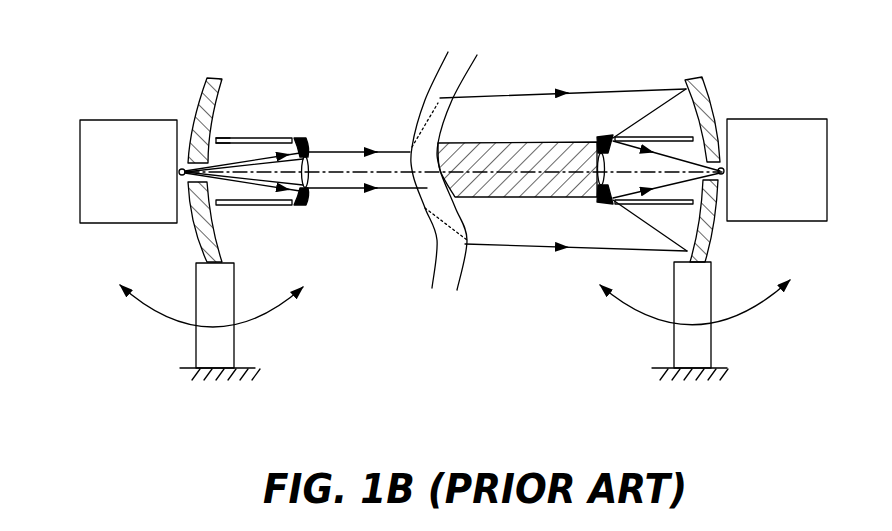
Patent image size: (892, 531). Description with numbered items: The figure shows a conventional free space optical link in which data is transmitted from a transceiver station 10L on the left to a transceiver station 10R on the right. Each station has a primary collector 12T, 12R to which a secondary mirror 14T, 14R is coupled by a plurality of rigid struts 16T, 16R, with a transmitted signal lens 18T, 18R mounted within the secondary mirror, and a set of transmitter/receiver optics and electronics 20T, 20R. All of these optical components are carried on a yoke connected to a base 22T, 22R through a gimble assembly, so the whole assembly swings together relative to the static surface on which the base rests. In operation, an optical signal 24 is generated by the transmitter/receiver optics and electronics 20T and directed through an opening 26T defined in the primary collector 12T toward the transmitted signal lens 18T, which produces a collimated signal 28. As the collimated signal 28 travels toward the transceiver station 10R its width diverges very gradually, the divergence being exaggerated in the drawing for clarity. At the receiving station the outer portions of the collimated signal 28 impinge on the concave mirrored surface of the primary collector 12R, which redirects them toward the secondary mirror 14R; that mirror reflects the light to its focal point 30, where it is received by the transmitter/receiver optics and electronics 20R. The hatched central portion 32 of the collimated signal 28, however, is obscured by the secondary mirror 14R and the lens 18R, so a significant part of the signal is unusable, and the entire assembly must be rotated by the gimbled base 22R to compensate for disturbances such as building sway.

The transceiver station 10L is at (288, 331).
The transceiver station 10R is at (636, 333).
The primary collector 12T is at (215, 80).
The primary collector 12R is at (700, 97).
The secondary mirror 14T is at (310, 142).
The secondary mirror 14R is at (597, 137).
The rigid struts 16T is at (257, 138).
The rigid struts 16R is at (655, 140).
The transmitted signal lens 18T is at (322, 186).
The transmitted signal lens 18R is at (597, 178).
The transmitter/receiver optics and electronics 20T is at (80, 172).
The transmitter/receiver optics and electronics 20R is at (828, 170).
The base 22T is at (213, 343).
The base 22R is at (693, 345).
The optical signal 24 is at (250, 182).
The opening 26T is at (216, 138).
The collimated signal 28 is at (357, 190).
The focal point 30 is at (719, 163).
The central portion 32 is at (503, 142).